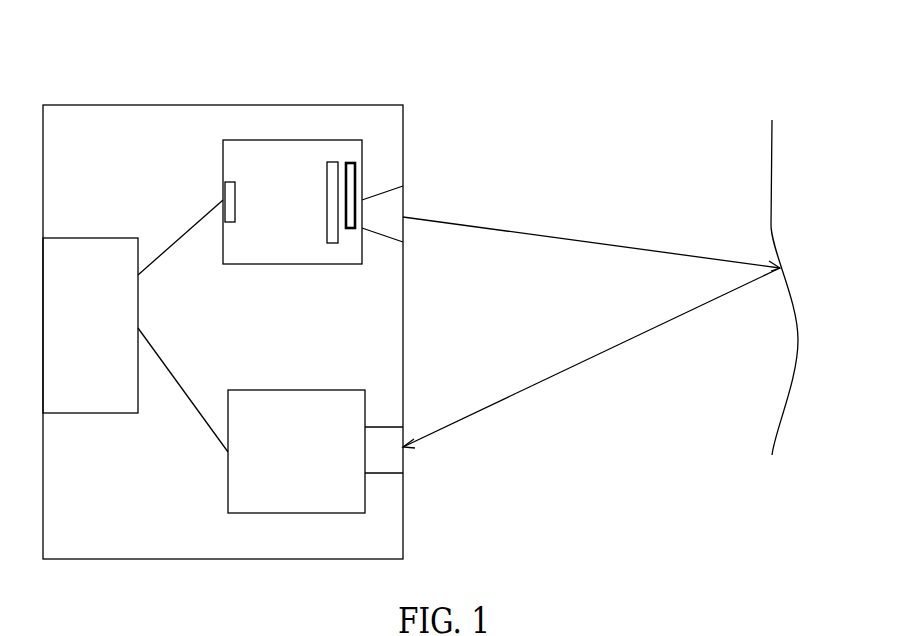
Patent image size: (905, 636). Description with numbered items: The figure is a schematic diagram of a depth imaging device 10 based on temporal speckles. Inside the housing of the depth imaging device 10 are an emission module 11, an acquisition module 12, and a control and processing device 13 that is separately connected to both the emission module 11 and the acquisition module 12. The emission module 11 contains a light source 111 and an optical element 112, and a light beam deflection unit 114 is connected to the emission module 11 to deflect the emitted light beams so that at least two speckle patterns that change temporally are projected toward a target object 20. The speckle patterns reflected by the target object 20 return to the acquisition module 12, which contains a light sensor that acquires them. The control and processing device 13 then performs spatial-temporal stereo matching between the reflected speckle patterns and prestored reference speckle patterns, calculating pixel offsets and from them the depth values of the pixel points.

The depth imaging device 10 is at (410, 91).
The emission module 11 is at (223, 160).
The light source 111 is at (230, 182).
The optical element 112 is at (333, 162).
The light beam deflection unit 114 is at (355, 178).
The acquisition module 12 is at (295, 390).
The control and processing device 13 is at (90, 238).
The target object 20 is at (773, 168).